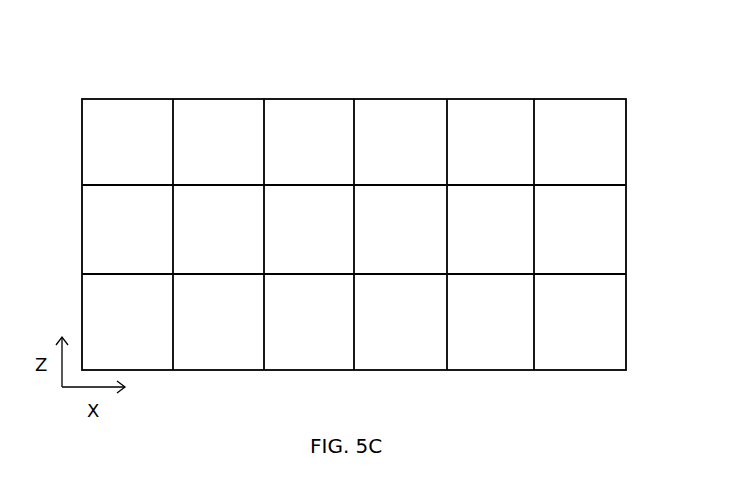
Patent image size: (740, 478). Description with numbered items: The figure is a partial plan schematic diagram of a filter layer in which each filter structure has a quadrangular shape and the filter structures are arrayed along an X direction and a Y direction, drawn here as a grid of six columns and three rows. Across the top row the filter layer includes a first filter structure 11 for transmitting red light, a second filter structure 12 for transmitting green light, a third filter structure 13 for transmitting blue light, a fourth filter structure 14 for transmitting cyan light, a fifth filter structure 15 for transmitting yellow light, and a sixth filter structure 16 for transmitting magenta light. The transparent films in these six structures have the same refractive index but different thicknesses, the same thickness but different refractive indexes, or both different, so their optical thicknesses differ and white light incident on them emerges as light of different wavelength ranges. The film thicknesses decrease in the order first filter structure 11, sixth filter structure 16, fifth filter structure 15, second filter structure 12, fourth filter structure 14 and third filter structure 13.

The first filter structure 11 is at (131, 125).
The second filter structure 12 is at (233, 128).
The third filter structure 13 is at (307, 137).
The fourth filter structure 14 is at (408, 128).
The fifth filter structure 15 is at (483, 130).
The sixth filter structure 16 is at (575, 129).